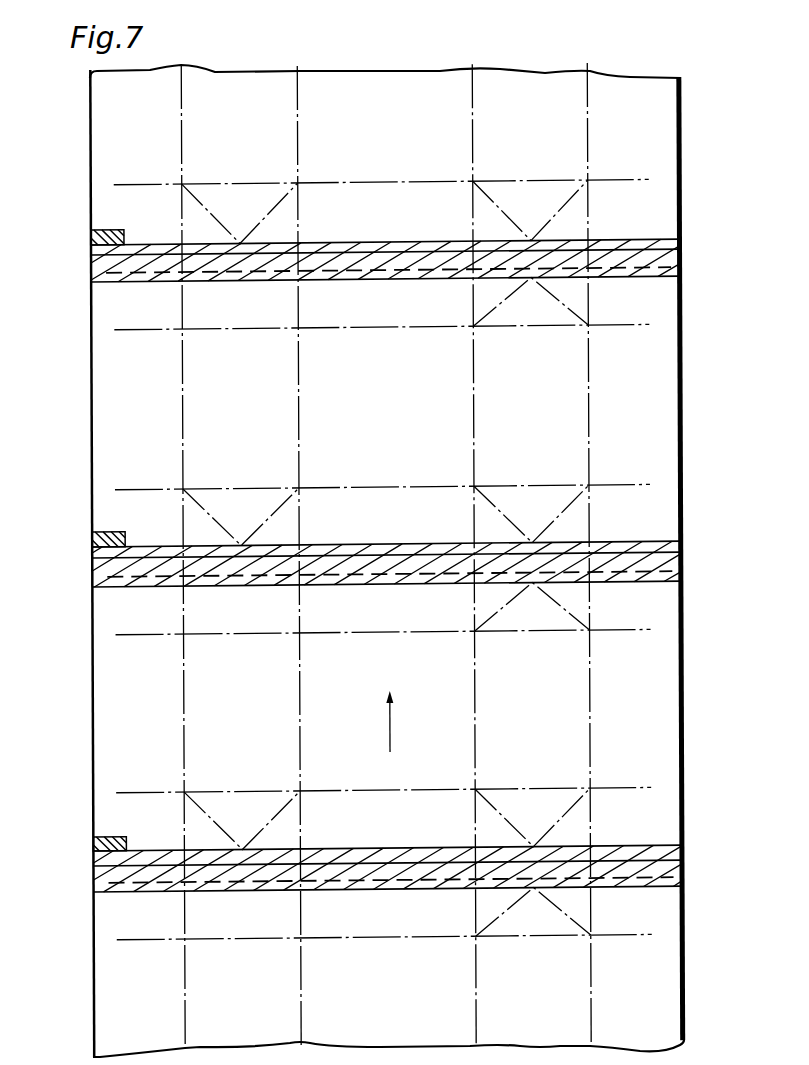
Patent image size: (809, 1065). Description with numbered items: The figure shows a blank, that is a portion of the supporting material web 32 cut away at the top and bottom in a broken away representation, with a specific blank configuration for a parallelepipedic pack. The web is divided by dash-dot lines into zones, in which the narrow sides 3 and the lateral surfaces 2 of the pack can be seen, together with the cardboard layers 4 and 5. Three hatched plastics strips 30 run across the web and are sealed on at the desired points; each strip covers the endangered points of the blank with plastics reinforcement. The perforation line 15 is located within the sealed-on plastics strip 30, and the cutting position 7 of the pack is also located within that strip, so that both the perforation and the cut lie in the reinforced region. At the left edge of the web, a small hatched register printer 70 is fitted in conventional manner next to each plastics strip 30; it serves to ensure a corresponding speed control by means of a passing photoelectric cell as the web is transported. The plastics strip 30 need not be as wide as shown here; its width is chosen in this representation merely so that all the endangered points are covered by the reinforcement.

The lateral surfaces 2 is at (396, 421).
The narrow sides 3 is at (247, 737).
The cardboard layer 4 is at (396, 833).
The cardboard layer 5 is at (151, 834).
The cutting position 7 is at (174, 249).
The perforation line 15 is at (128, 586).
The plastics strip 30 is at (110, 276).
The supporting material web 32 is at (86, 343).
The register printer 70 is at (89, 237).